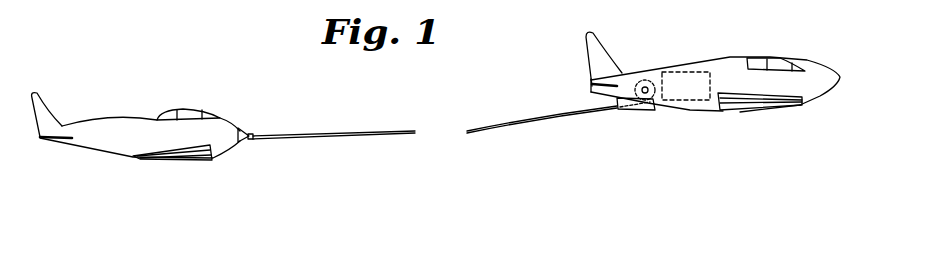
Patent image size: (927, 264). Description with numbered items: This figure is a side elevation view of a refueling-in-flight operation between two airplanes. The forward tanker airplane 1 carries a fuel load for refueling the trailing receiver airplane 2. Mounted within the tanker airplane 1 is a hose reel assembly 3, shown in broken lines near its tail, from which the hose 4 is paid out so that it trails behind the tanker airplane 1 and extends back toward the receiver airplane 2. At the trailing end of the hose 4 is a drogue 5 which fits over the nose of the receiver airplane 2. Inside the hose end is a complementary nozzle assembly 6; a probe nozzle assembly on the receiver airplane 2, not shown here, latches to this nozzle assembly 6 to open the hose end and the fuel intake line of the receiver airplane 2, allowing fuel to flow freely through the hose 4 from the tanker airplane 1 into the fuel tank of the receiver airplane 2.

The tanker airplane 1 is at (713, 115).
The receiver airplane 2 is at (128, 113).
The hose reel assembly 3 is at (653, 111).
The hose 4 is at (528, 122).
The drogue 5 is at (244, 131).
The nozzle assembly 6 is at (250, 134).